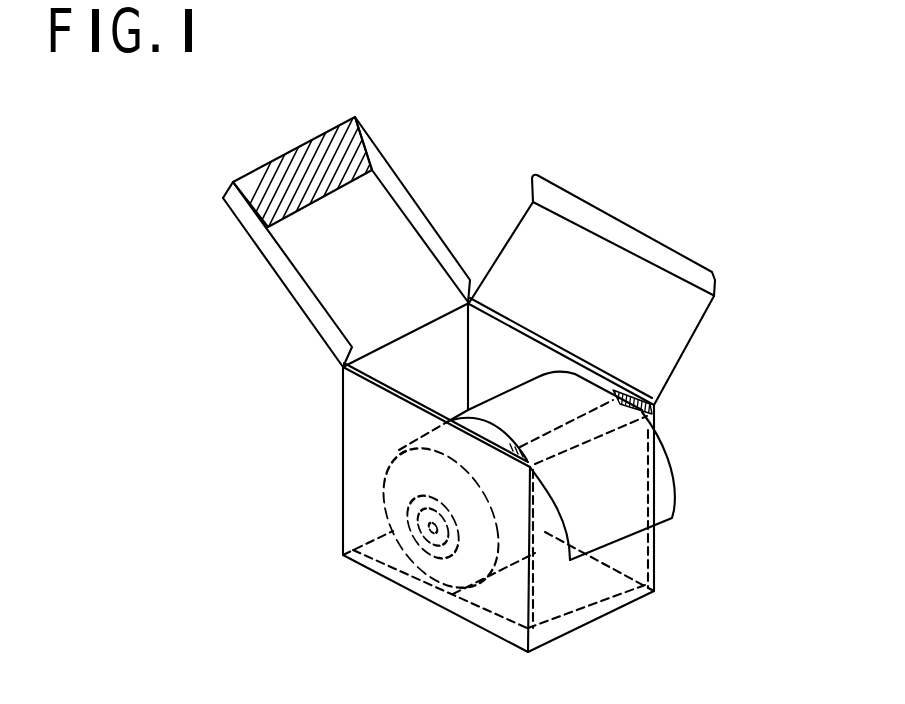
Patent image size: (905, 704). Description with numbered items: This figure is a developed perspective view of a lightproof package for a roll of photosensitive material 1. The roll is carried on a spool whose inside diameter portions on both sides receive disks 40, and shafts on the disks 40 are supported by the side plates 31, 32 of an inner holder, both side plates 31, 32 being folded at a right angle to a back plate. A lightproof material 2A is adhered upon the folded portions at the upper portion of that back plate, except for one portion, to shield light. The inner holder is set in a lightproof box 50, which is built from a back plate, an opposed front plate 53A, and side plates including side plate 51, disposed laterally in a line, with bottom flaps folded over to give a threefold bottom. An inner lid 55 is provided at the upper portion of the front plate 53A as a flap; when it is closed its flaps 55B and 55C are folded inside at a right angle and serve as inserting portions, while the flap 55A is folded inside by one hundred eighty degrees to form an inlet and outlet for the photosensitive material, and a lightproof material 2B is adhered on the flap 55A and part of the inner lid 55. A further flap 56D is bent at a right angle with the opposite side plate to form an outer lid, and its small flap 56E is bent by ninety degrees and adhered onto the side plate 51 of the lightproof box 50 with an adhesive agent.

The wound sheet roll 1 is at (675, 498).
The lightproof material 2A is at (657, 420).
The lightproof material 2B is at (360, 140).
The side plate 31 is at (510, 350).
The side plate 32 is at (393, 392).
The disk 40 is at (430, 550).
The lightproof box 50 is at (306, 336).
The side plate 51 is at (358, 490).
The front plate 53A is at (585, 580).
The inner lid 55 is at (303, 235).
The flap 55A is at (288, 168).
The flap 55B is at (412, 180).
The flap 55C is at (288, 282).
The flap 56D is at (667, 346).
The small flap 56E is at (655, 233).